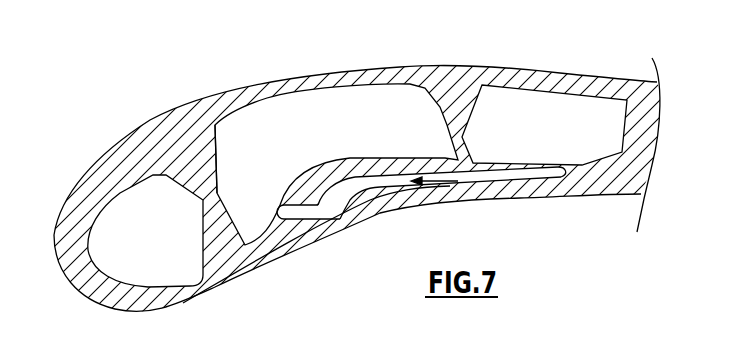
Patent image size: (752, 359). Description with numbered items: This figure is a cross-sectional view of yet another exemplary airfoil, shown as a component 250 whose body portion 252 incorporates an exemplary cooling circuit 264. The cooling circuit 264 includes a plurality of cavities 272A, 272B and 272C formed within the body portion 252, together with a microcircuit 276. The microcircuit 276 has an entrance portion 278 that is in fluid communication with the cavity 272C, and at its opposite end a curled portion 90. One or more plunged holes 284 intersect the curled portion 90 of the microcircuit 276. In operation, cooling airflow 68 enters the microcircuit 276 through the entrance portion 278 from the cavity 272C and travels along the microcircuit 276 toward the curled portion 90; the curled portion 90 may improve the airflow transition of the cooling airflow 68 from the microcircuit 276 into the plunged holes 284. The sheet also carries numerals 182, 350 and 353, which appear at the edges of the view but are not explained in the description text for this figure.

The component 250 is at (445, 45).
The body portion 252 is at (460, 77).
The cooling circuit 264 is at (219, 125).
The cavity 272A is at (177, 246).
The cavity 272B is at (333, 146).
The cavity 272C is at (590, 136).
The cooling airflow 68 is at (434, 176).
The curled portion 90 is at (370, 211).
The plunged holes 284 is at (328, 213).
The microcircuit 276 is at (495, 180).
The entrance portion 278 is at (567, 175).
The blade component 182 is at (103, 0).
The component 350 is at (145, 358).
The component 353 is at (303, 358).